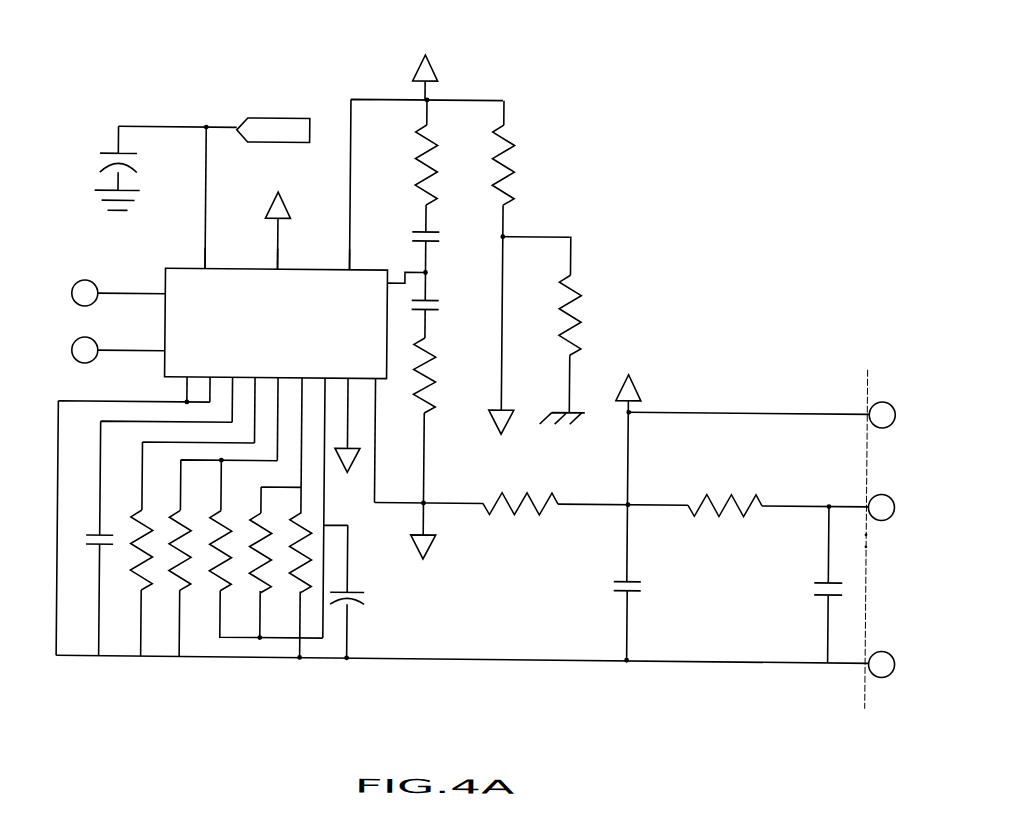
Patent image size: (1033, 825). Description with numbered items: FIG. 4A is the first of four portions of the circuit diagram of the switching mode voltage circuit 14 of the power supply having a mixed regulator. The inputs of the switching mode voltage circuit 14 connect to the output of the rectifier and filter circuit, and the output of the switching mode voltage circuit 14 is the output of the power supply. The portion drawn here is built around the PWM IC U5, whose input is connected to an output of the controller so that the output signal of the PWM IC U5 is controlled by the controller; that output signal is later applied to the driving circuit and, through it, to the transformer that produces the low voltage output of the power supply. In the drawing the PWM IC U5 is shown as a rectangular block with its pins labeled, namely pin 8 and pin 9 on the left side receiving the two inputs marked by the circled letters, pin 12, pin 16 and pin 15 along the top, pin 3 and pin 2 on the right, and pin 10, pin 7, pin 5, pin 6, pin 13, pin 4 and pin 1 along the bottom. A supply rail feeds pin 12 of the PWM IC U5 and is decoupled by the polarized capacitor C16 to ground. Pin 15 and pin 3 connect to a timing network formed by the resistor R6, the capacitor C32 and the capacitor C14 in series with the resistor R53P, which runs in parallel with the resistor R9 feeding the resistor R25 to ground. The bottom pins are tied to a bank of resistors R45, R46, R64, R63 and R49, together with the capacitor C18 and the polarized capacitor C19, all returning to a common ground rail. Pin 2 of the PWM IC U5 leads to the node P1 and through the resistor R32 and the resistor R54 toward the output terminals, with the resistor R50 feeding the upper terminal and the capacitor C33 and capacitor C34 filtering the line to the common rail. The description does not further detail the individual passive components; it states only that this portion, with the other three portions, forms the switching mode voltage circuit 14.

The switching mode voltage circuit 14 is at (707, 113).
The PWM IC U5 is at (261, 376).
The capacitor C16 is at (120, 165).
The capacitor C18 is at (147, 539).
The capacitor C19 is at (367, 593).
The capacitor C32 is at (433, 256).
The capacitor C14 is at (445, 317).
The capacitor C33 is at (649, 532).
The capacitor C34 is at (806, 584).
The resistor R6 is at (412, 166).
The resistor R9 is at (519, 268).
The resistor R25 is at (543, 331).
The resistor R53P is at (449, 421).
The resistor R32 is at (520, 490).
The resistor R54 is at (725, 493).
The resistor R50 is at (749, 397).
The resistor R45 is at (183, 549).
The resistor R46 is at (214, 557).
The resistor R64 is at (257, 550).
The resistor R63 is at (265, 562).
The resistor R49 is at (292, 586).
The connector P1 is at (423, 548).
The pin 8 of U5 8 is at (140, 294).
The pin 9 of U5 9 is at (140, 337).
The pin 12 of U5 12 is at (204, 272).
The pin 16 of U5 16 is at (277, 273).
The pin 15 of U5 15 is at (349, 274).
The pin 3 of U5 3 is at (399, 282).
The pin 10 of U5 10 is at (186, 374).
The pin 7 of U5 7 is at (206, 381).
The pin 5 of U5 5 is at (230, 391).
The pin 6 of U5 6 is at (252, 402).
The pin 13 of U5 13 is at (275, 406).
The pin 4 of U5 4 is at (299, 438).
The pin 1 of U5 1 is at (345, 405).
The pin 2 of U5 2 is at (375, 429).